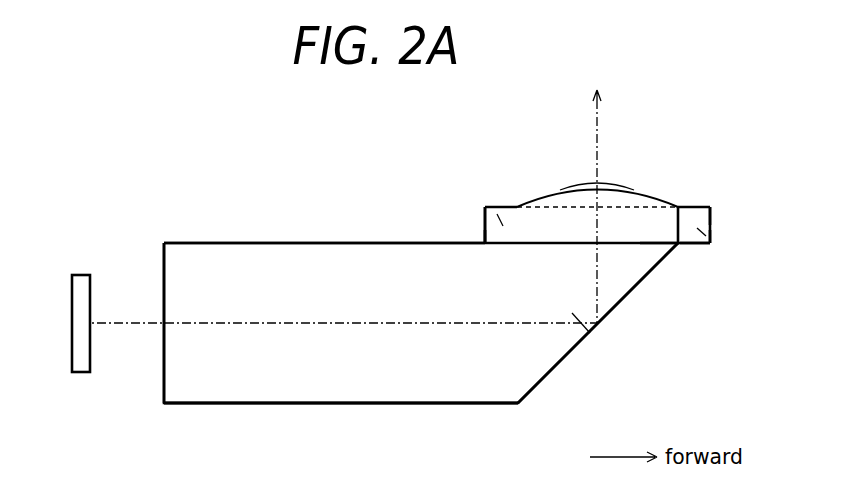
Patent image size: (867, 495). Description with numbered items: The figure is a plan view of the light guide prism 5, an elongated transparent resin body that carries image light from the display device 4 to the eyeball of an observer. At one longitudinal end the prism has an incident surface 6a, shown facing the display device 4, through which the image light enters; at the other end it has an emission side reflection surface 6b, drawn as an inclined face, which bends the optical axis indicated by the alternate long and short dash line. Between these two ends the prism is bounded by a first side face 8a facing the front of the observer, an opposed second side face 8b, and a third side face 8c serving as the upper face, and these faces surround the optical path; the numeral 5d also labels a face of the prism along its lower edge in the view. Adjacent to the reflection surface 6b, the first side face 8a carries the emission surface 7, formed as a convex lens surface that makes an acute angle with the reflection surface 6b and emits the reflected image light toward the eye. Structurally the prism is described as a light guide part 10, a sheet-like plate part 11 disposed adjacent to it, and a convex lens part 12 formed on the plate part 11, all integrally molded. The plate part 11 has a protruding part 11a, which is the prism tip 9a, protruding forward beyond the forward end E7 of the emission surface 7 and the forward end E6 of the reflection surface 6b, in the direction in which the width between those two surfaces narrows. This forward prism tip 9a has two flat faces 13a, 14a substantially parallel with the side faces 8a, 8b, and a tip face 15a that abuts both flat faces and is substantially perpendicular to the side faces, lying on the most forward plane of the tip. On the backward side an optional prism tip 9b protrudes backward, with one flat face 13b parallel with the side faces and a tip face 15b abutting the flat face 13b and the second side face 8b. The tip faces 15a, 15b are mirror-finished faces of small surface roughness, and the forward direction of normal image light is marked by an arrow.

The display device 4 is at (72, 300).
The light guide prism 5 is at (370, 375).
The bottom surface of light guide body 5d is at (208, 377).
The incident surface 6a is at (164, 363).
The emission side reflection surface 6b is at (555, 365).
The emission surface 7 is at (560, 188).
The first side face 8a is at (222, 243).
The second side face 8b is at (270, 403).
The third side face 8c is at (473, 380).
The prism tip 9a is at (712, 243).
The protruding part 11a is at (752, 244).
The prism tip 9b is at (500, 222).
The light guide part 10 is at (590, 333).
The plate part 11 is at (642, 228).
The convex lens part 12 is at (612, 200).
The flat face 13a is at (700, 206).
The flat face 13b is at (500, 206).
The flat face 14a is at (702, 246).
The tip face 15a is at (712, 214).
The tip face 15b is at (482, 238).
The forward end of the reflection surface E6 is at (678, 244).
The forward end of the emission surface E7 is at (678, 207).